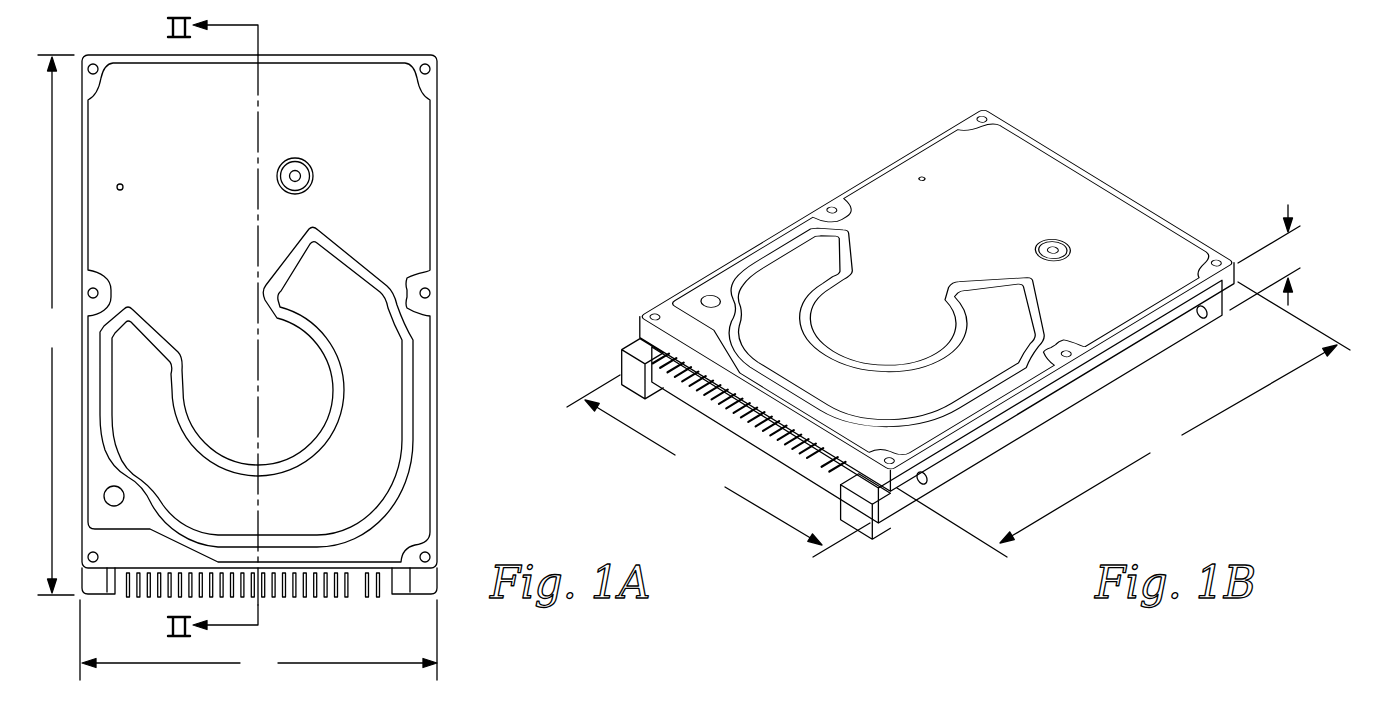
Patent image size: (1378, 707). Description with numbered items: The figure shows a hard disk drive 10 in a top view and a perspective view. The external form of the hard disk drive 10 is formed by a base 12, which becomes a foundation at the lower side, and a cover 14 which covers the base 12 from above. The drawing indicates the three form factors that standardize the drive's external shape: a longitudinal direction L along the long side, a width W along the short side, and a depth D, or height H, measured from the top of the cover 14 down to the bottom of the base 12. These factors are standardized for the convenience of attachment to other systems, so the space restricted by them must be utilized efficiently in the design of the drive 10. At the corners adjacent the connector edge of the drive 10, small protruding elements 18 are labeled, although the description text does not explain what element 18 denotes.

In FIG. 1A, the hard disk drive 10 is at (234, 347).
In FIG. 1B, the hard disk drive 10 is at (959, 325).
In FIG. 1B, the base 12 is at (1139, 353).
In FIG. 1B, the cover 14 is at (1078, 172).
In FIG. 1A, the mounting tab 18 is at (95, 588).
In FIG. 1B, the mounting tab 18 is at (627, 343).